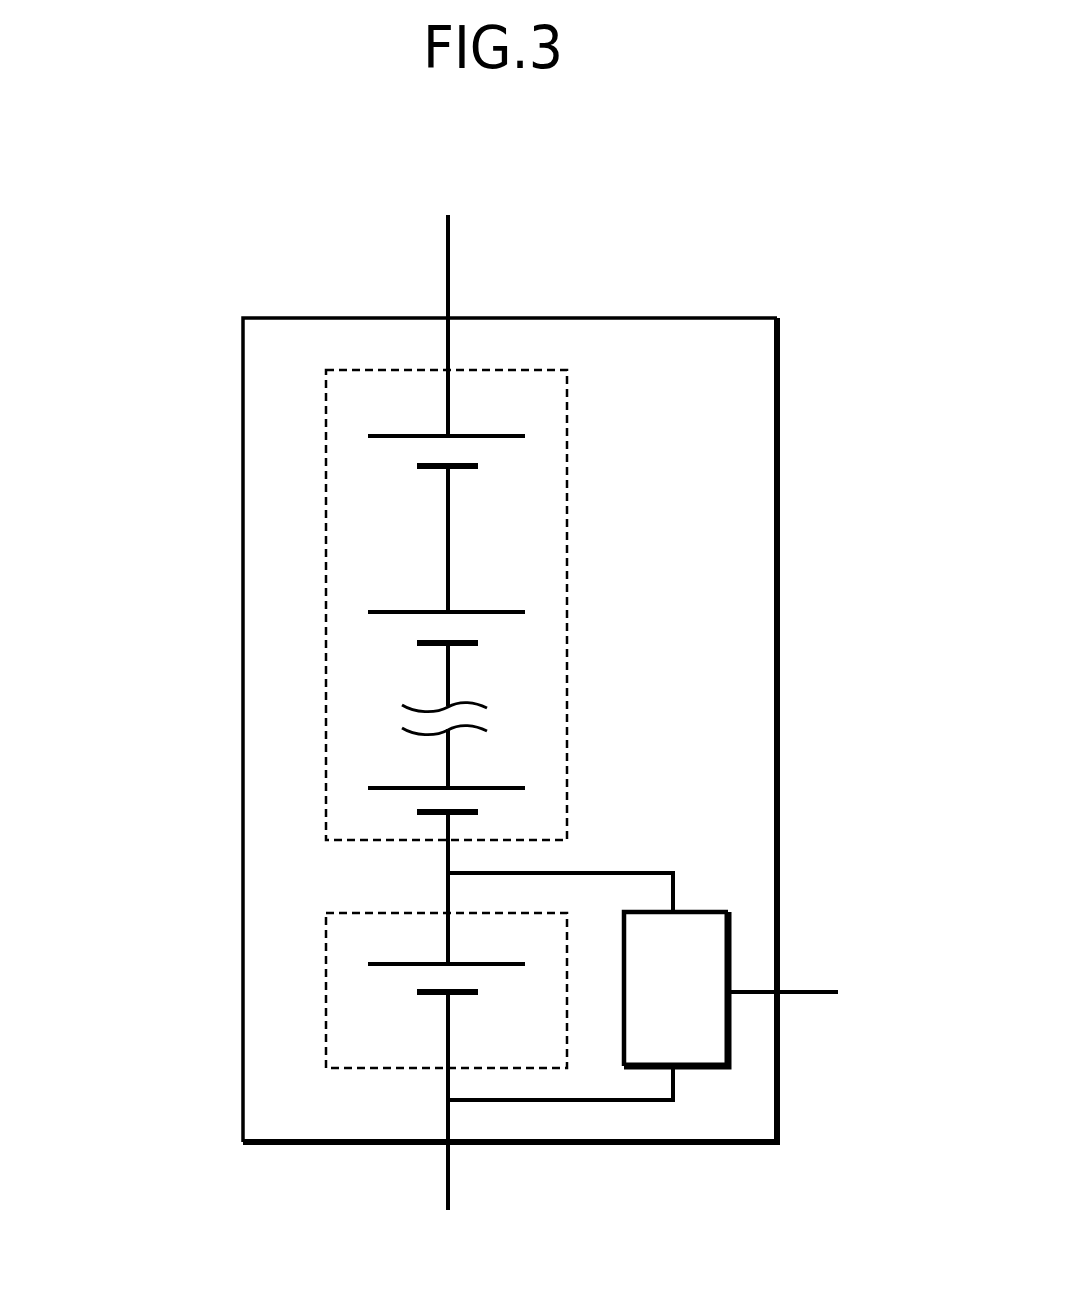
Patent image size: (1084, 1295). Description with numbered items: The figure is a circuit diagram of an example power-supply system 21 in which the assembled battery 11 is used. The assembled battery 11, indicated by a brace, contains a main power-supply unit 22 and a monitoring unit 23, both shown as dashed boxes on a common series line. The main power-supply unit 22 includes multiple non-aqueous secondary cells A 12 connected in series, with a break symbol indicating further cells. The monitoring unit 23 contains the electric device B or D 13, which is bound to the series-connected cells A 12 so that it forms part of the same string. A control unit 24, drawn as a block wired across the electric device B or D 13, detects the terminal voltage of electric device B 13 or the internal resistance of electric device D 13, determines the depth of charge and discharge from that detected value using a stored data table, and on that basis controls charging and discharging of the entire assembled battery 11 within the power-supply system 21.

The assembled battery 11 is at (150, 523).
The non-aqueous secondary cells A 12 is at (495, 450).
The electric device B or D 13 is at (485, 978).
The power-supply system 21 is at (818, 321).
The main power-supply unit 22 is at (347, 555).
The monitoring unit 23 is at (348, 992).
The control unit 24 is at (703, 945).